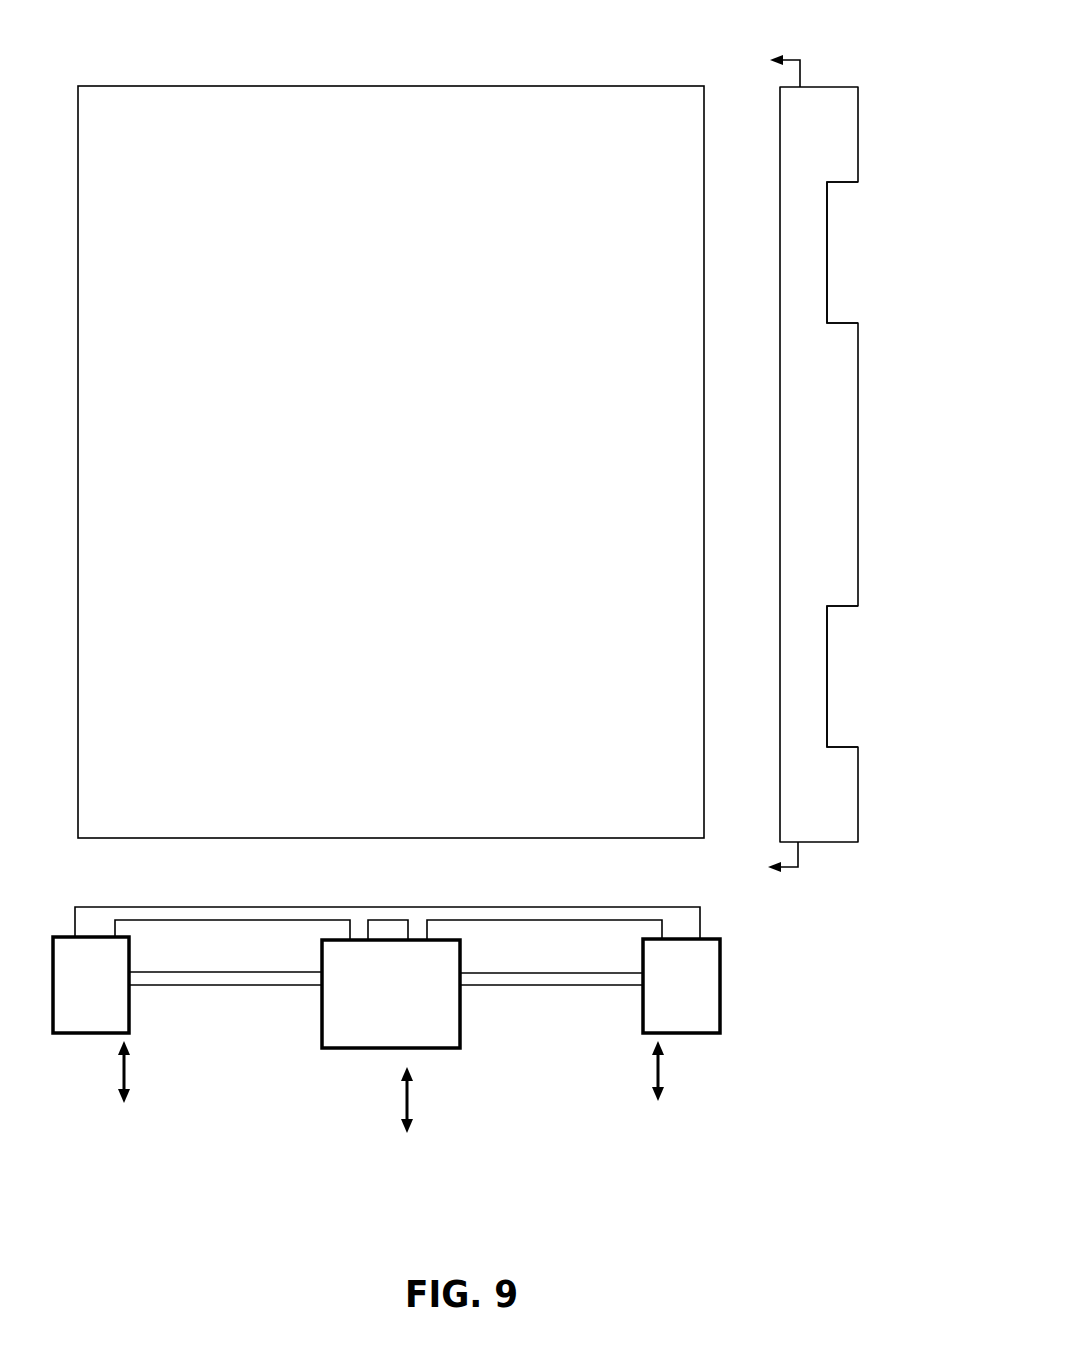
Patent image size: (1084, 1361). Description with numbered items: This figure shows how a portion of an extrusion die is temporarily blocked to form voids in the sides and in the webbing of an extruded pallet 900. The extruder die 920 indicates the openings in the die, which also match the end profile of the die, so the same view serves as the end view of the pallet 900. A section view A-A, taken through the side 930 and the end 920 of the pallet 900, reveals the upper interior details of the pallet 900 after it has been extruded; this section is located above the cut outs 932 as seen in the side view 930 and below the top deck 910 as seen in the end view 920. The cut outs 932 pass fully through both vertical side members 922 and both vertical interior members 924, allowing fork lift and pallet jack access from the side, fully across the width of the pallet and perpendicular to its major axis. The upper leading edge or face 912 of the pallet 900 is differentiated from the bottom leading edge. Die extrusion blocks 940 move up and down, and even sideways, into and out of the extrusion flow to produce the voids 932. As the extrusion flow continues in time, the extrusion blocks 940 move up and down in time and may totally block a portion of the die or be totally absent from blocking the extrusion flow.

The pallet 900 is at (808, 504).
The top deck 910 is at (453, 120).
The upper leading edge or face 912 is at (387, 888).
The extruder die 920 is at (543, 985).
The vertical side members 922 is at (688, 925).
The vertical interior members 924 is at (363, 930).
The side view 930 is at (864, 459).
The cut outs 932 is at (872, 464).
The die extrusion blocks 940 is at (75, 1034).